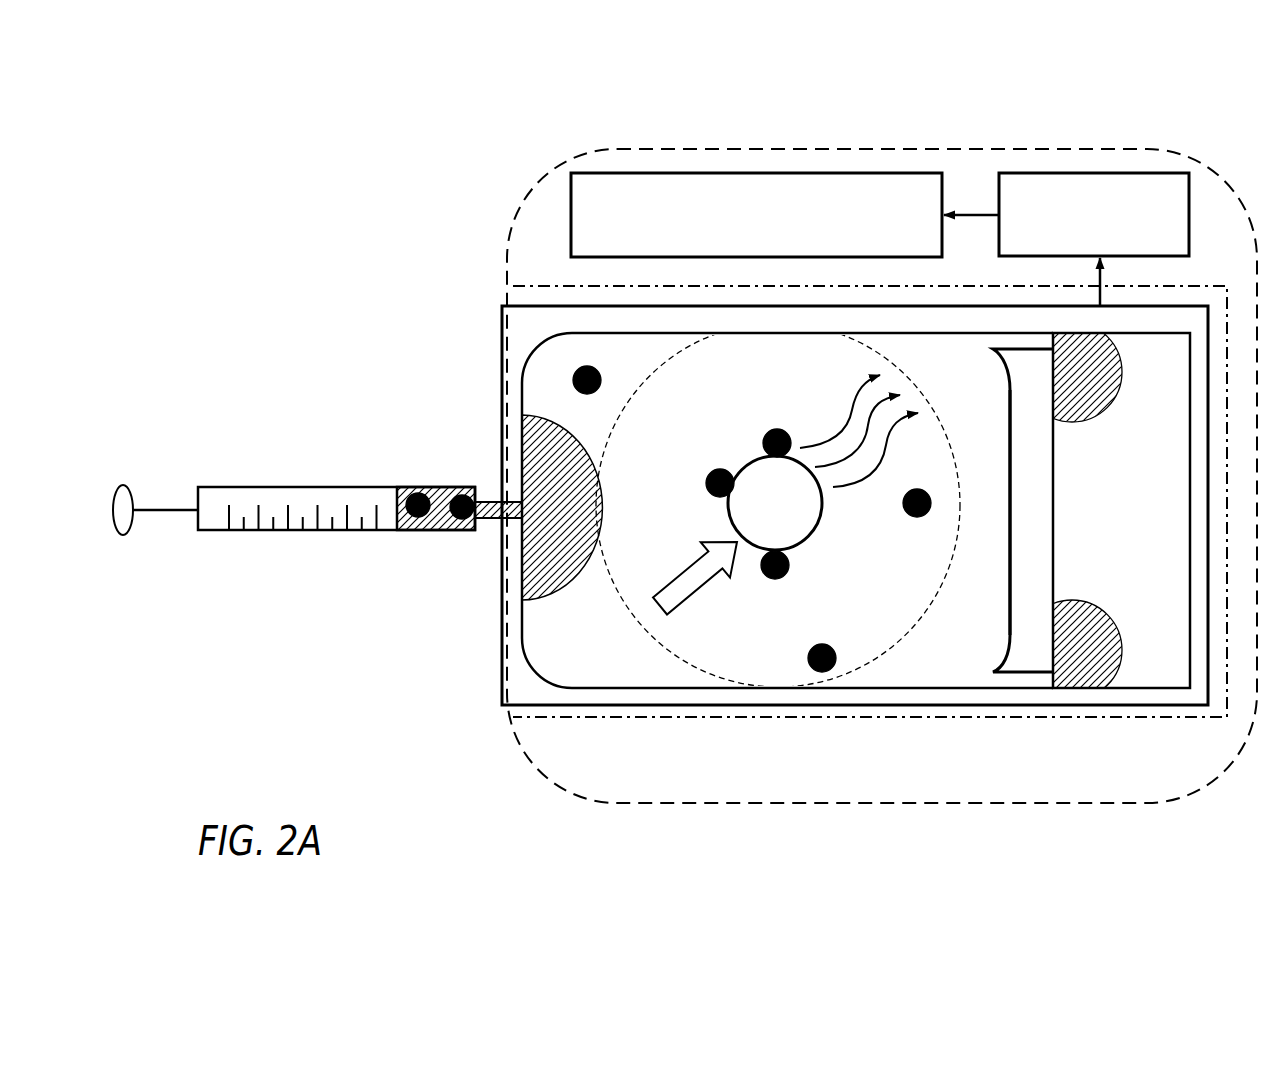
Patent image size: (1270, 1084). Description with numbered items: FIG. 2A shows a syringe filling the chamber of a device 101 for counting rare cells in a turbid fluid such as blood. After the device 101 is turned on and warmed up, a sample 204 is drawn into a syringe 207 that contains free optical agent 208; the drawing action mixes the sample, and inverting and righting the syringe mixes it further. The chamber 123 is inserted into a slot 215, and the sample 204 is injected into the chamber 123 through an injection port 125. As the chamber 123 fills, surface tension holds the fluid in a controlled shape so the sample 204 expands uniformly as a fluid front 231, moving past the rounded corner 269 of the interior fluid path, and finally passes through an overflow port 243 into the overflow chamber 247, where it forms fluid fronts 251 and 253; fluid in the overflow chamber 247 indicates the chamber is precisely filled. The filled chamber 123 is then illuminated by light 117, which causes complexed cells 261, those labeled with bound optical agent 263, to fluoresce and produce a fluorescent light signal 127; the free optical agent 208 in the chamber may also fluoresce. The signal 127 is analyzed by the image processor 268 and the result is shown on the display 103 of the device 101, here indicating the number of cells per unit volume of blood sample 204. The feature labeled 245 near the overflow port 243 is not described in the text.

The device 101 is at (510, 267).
The light source 103 is at (571, 201).
The light 117 is at (690, 557).
The chamber 123 is at (500, 364).
The injection port 125 is at (506, 521).
The fluorescent light signal 127 is at (848, 412).
The sample 204 is at (420, 530).
The syringe 207 is at (260, 530).
The free optical agent 208 is at (407, 493).
The slot 215 is at (580, 717).
The fluid front 231 is at (527, 602).
The overflow port 243 is at (1010, 675).
The filter edge 245 is at (1025, 340).
The overflow chamber 247 is at (1172, 680).
The fluid front 251 is at (1075, 670).
The fluid front 253 is at (1078, 398).
The complexed cells 261 is at (747, 467).
The bound optical agent 263 is at (787, 570).
The image processor 268 is at (1043, 173).
The rounded corner 269 is at (527, 655).